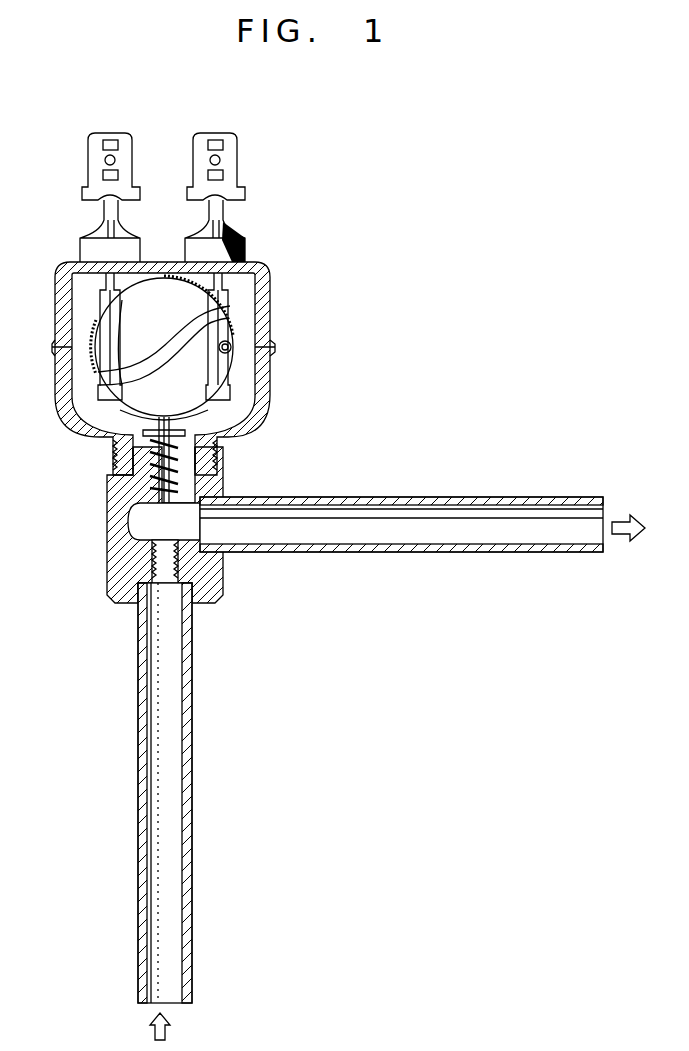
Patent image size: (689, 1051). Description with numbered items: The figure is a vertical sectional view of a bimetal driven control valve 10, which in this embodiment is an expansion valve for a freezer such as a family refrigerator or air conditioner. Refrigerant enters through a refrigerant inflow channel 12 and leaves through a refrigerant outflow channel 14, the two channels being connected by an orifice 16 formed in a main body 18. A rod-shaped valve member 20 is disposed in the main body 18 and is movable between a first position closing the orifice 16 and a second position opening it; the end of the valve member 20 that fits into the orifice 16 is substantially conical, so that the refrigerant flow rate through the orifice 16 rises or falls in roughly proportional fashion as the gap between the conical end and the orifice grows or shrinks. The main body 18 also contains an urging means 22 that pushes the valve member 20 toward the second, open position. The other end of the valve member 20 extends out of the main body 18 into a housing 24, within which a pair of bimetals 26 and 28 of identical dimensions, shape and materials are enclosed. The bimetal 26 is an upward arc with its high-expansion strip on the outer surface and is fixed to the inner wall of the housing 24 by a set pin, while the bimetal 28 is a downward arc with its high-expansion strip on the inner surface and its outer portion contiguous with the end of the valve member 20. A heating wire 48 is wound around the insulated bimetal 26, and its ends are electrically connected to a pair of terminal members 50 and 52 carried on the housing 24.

The bimetal driven control valve 10 is at (273, 473).
The refrigerant inflow channel 12 is at (181, 1004).
The refrigerant outflow channel 14 is at (588, 506).
The orifice 16 is at (173, 602).
The main body 18 is at (221, 590).
The valve member 20 is at (183, 529).
The urging means 22 is at (215, 458).
The housing 24 is at (62, 305).
The bimetal 26 is at (172, 276).
The bimetal 28 is at (190, 415).
The heating wire 48 is at (142, 355).
The terminal member 50 is at (132, 163).
The terminal member 52 is at (237, 163).